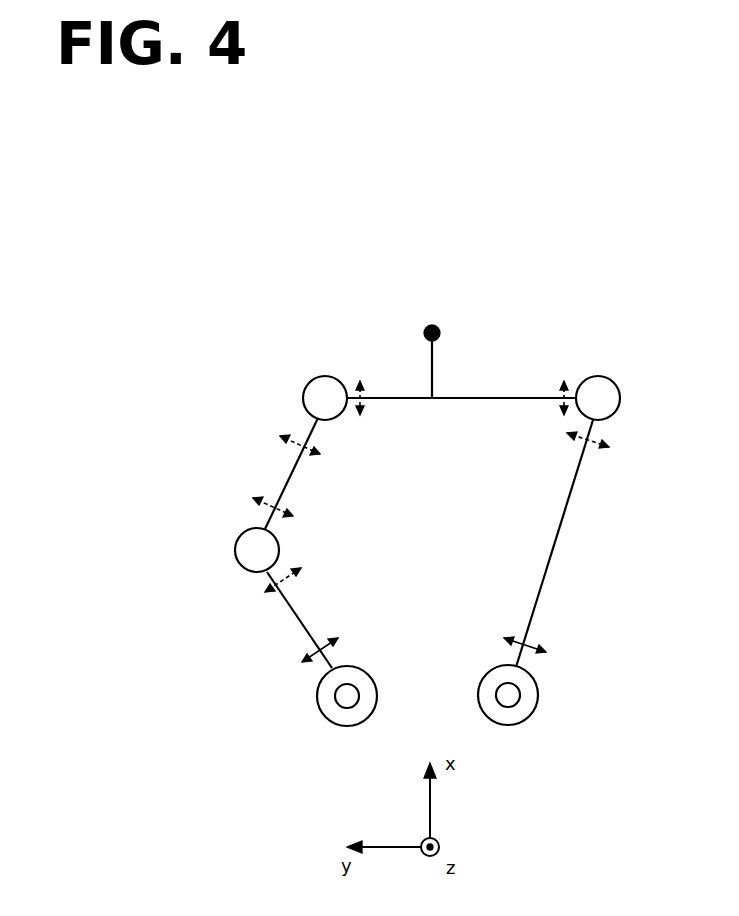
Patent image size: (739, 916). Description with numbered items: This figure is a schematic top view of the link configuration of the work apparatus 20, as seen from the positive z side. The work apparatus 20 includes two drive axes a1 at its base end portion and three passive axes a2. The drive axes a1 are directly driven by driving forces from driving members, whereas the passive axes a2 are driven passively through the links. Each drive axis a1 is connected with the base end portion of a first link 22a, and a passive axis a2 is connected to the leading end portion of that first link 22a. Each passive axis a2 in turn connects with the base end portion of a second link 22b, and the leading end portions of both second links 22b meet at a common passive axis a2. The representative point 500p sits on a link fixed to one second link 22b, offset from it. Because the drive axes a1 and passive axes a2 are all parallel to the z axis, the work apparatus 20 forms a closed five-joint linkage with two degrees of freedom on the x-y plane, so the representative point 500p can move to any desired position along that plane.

The work apparatus 20 is at (570, 312).
The first link 22a is at (298, 630).
The second link 22b is at (285, 487).
The drive axis a1 is at (345, 697).
The passive axis a2 is at (322, 400).
The representative point 500p is at (428, 326).